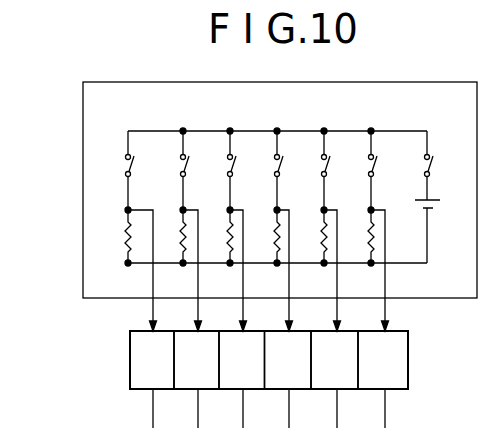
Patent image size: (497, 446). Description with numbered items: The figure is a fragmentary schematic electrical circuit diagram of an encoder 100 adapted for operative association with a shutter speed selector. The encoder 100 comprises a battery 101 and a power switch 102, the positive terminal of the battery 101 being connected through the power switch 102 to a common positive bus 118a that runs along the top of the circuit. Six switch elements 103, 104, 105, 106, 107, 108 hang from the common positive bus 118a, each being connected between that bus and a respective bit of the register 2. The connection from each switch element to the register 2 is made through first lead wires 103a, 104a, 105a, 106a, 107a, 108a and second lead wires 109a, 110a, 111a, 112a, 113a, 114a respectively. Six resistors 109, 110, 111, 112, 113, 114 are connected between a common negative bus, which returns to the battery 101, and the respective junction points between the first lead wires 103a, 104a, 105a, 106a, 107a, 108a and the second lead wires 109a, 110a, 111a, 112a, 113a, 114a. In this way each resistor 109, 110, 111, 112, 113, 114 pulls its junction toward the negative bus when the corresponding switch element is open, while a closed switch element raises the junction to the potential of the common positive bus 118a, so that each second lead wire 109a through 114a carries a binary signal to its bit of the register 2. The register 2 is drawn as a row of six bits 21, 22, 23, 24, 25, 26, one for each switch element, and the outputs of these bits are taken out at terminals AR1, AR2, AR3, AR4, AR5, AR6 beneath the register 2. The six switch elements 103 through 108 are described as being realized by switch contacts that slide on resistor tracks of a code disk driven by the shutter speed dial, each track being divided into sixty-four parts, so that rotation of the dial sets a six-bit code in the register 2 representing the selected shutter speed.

The encoder 100 is at (83, 187).
The battery 101 is at (436, 203).
The power switch 102 is at (432, 166).
The switch element 103 is at (376, 166).
The switch element 104 is at (329, 166).
The switch element 105 is at (282, 166).
The switch element 106 is at (244, 164).
The switch element 107 is at (197, 164).
The switch element 108 is at (133, 166).
The first lead wire 103a is at (372, 188).
The first lead wire 104a is at (325, 188).
The first lead wire 105a is at (278, 188).
The first lead wire 106a is at (242, 187).
The first lead wire 107a is at (195, 187).
The first lead wire 108a is at (129, 188).
The resistor 109 is at (370, 235).
The resistor 110 is at (323, 235).
The resistor 111 is at (275, 235).
The resistor 112 is at (229, 235).
The resistor 113 is at (182, 235).
The resistor 114 is at (126, 235).
The second lead wire 109a is at (385, 263).
The second lead wire 110a is at (337, 263).
The second lead wire 111a is at (289, 263).
The second lead wire 112a is at (243, 263).
The second lead wire 113a is at (198, 263).
The second lead wire 114a is at (153, 263).
The common positive bus 118a is at (210, 132).
The register 2 is at (409, 362).
The register bit 21 is at (383, 360).
The register bit 22 is at (334, 360).
The register bit 23 is at (288, 360).
The register bit 24 is at (242, 360).
The register bit 25 is at (196, 360).
The register bit 26 is at (152, 360).
The output terminal AR1 is at (384, 405).
The output terminal AR2 is at (336, 405).
The output terminal AR3 is at (288, 405).
The output terminal AR4 is at (242, 405).
The output terminal AR5 is at (197, 405).
The output terminal AR6 is at (152, 405).